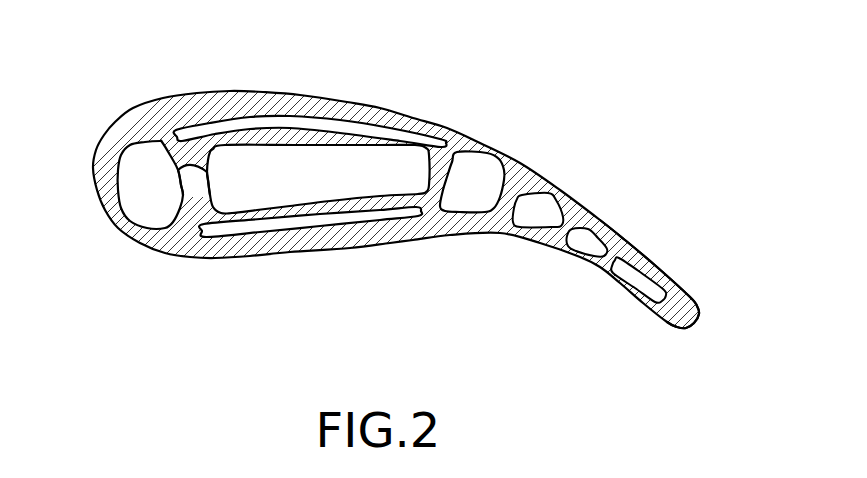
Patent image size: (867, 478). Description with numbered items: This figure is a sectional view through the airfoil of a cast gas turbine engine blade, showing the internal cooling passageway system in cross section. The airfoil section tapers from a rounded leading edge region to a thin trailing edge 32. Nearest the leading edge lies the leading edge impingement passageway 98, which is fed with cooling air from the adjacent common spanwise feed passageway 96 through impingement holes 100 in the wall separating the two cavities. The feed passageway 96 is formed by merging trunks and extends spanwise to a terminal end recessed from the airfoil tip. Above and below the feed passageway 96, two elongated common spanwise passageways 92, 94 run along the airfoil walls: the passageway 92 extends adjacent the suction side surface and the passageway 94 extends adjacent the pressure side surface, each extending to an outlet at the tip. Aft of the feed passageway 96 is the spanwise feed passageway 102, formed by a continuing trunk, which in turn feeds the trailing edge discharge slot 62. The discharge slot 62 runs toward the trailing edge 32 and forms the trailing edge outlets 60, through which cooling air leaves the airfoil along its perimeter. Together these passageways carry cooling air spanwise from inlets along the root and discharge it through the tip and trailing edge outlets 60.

The trailing edge 32 is at (693, 323).
The trailing edge outlets 60 is at (690, 338).
The trailing edge discharge slot 62 is at (667, 270).
The common spanwise passageway 92 is at (290, 120).
The common spanwise passageway 94 is at (382, 216).
The common spanwise feed passageway 96 is at (270, 188).
The leading edge impingement passageway 98 is at (140, 188).
The impingement holes 100 is at (192, 186).
The spanwise feed passageway 102 is at (481, 172).